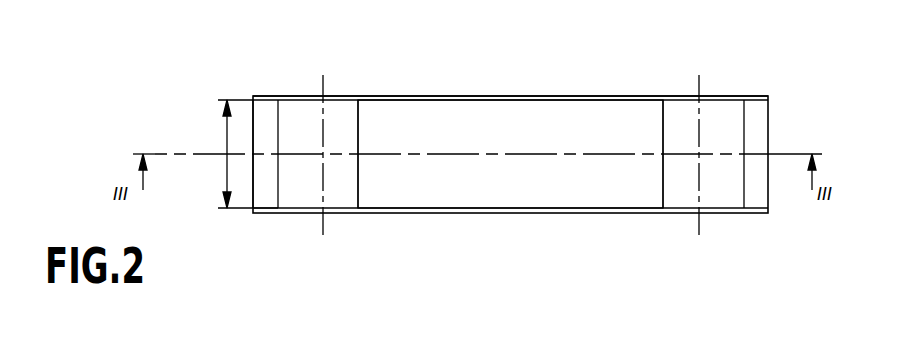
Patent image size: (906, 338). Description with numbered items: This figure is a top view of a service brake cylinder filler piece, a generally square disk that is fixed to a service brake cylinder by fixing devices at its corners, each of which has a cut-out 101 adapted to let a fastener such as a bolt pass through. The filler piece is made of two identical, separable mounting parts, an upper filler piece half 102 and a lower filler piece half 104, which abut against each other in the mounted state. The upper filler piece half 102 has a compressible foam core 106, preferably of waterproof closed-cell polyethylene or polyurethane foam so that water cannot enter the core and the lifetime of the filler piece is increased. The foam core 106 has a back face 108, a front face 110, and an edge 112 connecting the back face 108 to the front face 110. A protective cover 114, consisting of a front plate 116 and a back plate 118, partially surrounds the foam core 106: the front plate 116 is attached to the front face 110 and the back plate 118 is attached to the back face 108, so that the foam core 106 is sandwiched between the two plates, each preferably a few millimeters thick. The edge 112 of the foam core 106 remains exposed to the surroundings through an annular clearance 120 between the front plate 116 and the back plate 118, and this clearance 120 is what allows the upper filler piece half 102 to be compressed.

The cut-out 101 is at (307, 128).
The upper filler piece half 102 is at (720, 232).
The lower filler piece half 104 is at (725, 96).
The foam core 106 is at (755, 135).
The back face 108 is at (517, 210).
The front face 110 is at (467, 98).
The edge 112 is at (578, 128).
The protective cover 114 is at (302, 284).
The front plate 116 is at (259, 100).
The back plate 118 is at (257, 213).
The annular clearance 120 is at (225, 140).